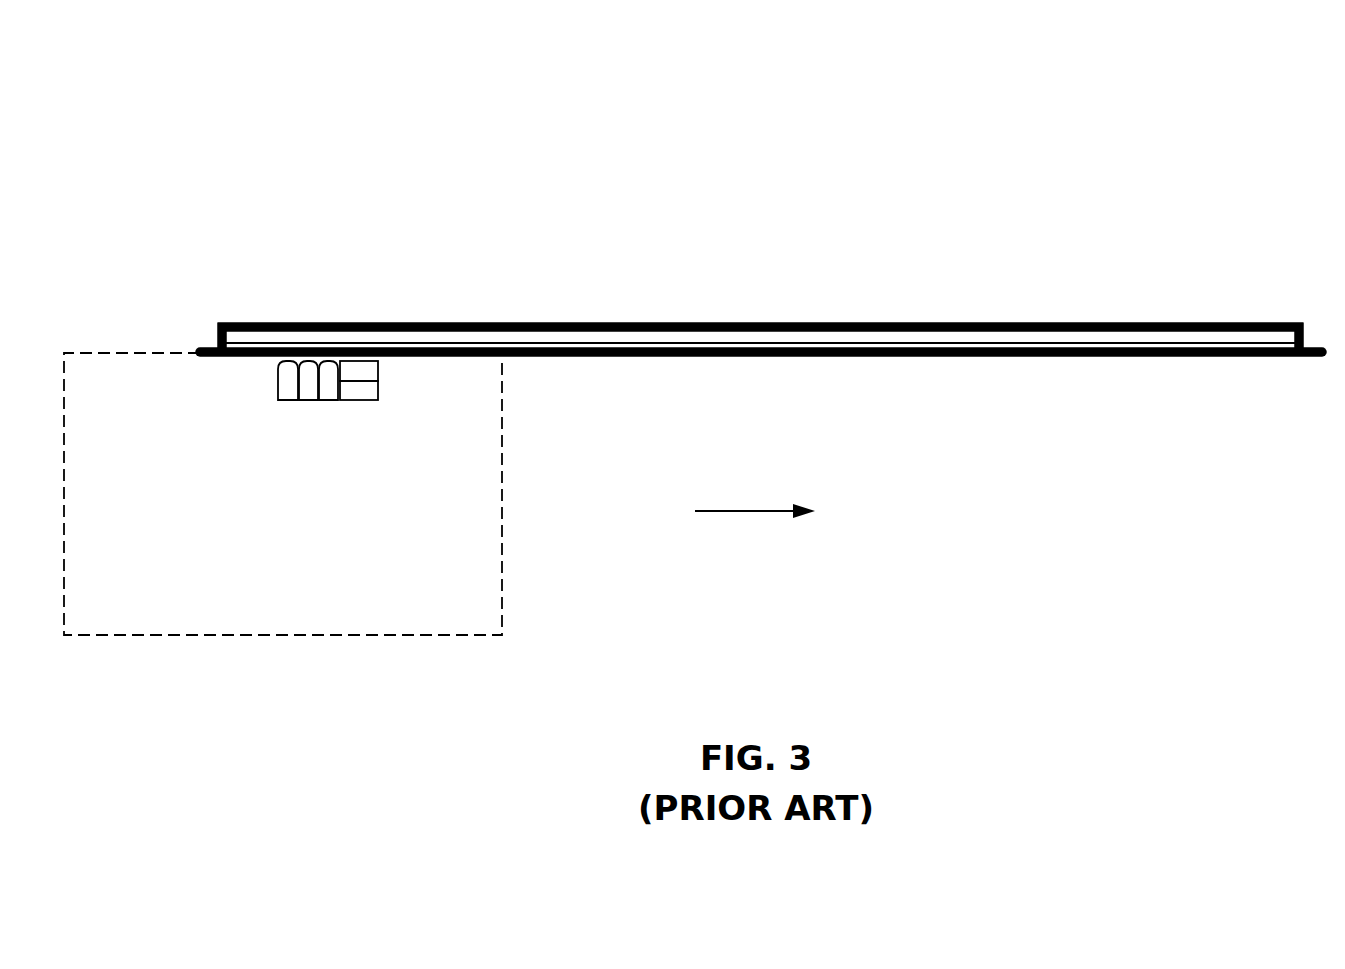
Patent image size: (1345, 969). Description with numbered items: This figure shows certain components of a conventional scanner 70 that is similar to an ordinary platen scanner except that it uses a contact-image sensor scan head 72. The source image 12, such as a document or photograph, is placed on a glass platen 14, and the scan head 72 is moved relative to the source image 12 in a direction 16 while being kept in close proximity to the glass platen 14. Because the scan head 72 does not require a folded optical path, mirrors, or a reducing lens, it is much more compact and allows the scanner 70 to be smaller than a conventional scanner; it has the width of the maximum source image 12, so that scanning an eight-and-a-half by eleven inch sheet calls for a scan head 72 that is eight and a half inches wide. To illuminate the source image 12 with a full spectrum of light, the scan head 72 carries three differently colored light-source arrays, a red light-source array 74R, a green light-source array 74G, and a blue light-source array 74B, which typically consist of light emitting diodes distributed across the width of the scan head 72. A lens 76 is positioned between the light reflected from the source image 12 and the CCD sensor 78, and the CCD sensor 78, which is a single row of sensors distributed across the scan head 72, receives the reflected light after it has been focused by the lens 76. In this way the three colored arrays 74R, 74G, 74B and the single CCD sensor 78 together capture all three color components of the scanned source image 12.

The conventional scanner 70 is at (374, 96).
The source image 12 is at (982, 322).
The glass platen 14 is at (1260, 355).
The direction 16 is at (755, 513).
The contact-image sensor scan head 72 is at (212, 706).
The red light-source array 74R is at (288, 402).
The green light-source array 74G is at (308, 402).
The blue light-source array 74B is at (328, 402).
The lens 76 is at (379, 372).
The CCD sensor 78 is at (358, 402).